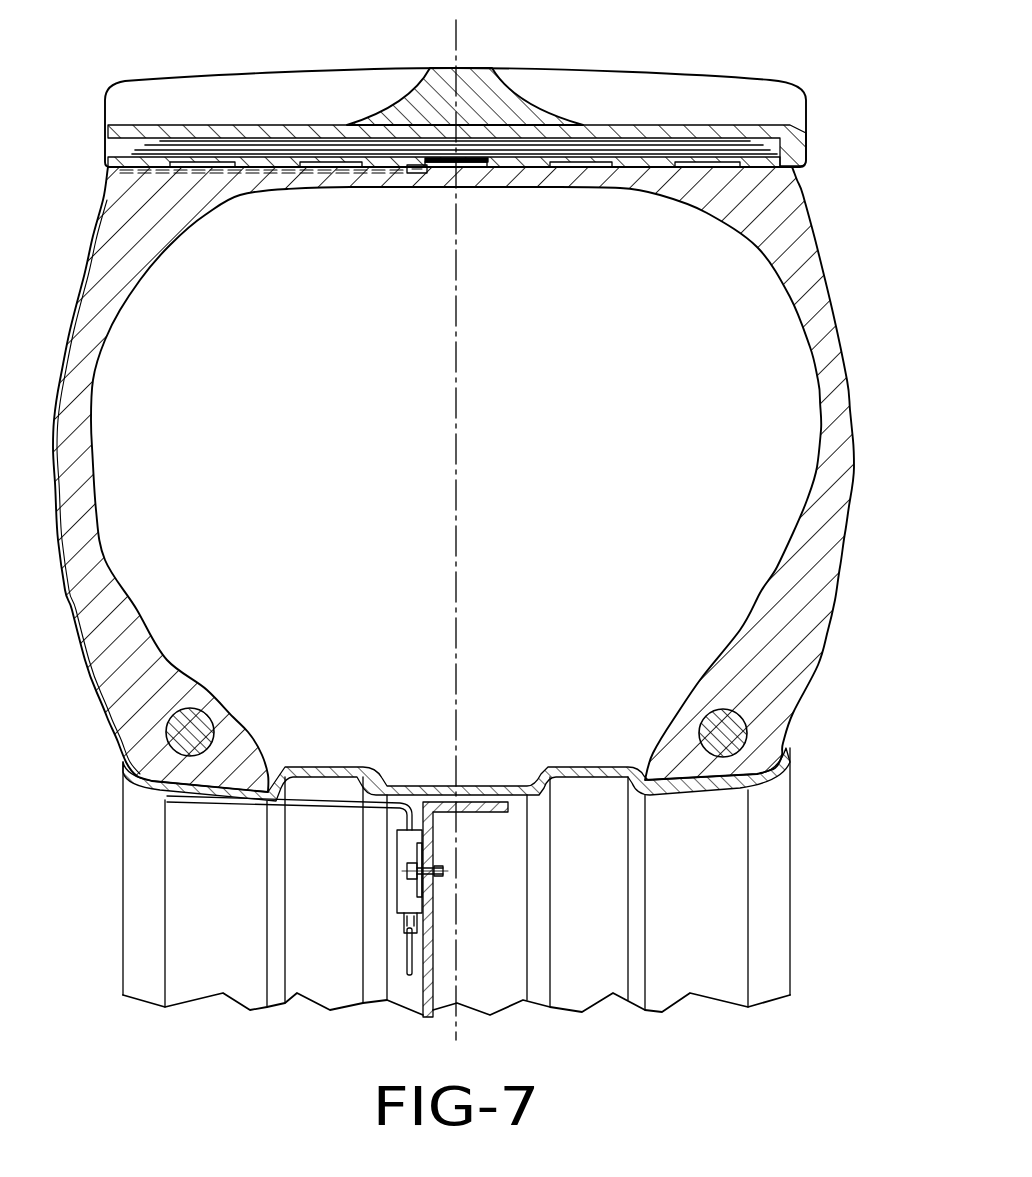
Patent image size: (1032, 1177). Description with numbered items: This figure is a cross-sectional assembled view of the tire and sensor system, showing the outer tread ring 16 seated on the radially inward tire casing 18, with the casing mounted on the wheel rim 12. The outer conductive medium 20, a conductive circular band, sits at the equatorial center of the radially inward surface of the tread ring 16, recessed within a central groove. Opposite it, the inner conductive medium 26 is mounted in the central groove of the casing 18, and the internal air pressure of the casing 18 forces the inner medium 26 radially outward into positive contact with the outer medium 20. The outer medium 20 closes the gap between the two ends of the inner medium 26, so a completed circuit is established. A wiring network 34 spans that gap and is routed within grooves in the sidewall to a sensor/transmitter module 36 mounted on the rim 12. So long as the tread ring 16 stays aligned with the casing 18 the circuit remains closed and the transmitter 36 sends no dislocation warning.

The rim 12 is at (433, 988).
The outer tread ring 16 is at (475, 76).
The tire casing 18 is at (803, 270).
The outer conductive medium 20 is at (443, 158).
The inner conductive medium 26 is at (469, 171).
The wiring network 34 is at (312, 172).
The sensor/transmitter module 36 is at (407, 853).